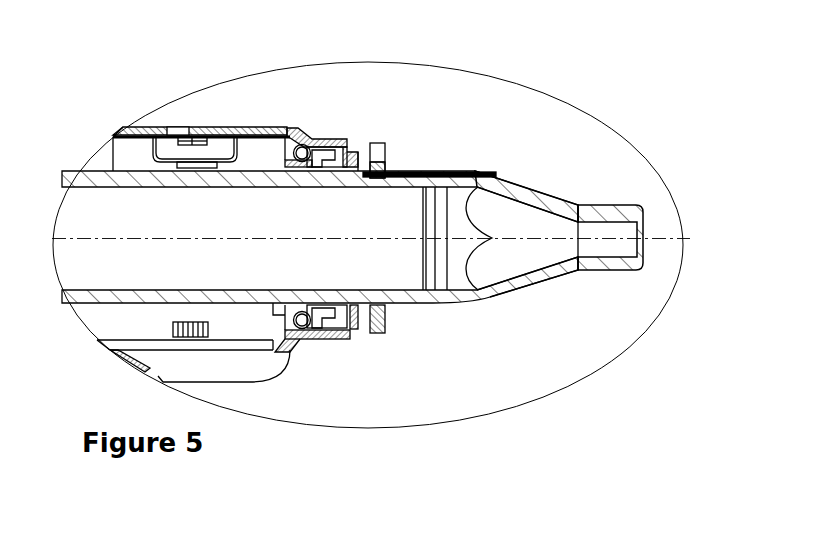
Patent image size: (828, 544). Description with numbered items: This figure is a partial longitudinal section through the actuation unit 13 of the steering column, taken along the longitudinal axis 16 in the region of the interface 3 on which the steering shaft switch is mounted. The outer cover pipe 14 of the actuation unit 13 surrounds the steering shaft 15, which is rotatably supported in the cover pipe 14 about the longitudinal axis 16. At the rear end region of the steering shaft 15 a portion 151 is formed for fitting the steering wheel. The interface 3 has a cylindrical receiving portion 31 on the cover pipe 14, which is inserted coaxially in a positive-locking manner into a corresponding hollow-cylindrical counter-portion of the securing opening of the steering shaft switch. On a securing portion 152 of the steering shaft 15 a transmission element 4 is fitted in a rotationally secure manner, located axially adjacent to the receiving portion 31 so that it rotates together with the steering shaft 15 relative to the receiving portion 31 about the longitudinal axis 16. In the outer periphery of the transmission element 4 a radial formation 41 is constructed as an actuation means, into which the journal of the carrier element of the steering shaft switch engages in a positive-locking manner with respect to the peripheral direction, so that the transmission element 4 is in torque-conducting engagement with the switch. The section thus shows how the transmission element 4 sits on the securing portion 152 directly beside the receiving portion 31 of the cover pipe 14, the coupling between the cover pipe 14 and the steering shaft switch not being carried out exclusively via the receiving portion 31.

The steering shaft 15 is at (115, 180).
The portion for fitting a steering wheel 151 is at (549, 198).
The securing portion 152 is at (420, 175).
The longitudinal axis 16 is at (656, 240).
The cover pipe 14 is at (134, 126).
The actuation unit 13 is at (210, 118).
The interface 3 is at (322, 108).
The receiving portion 31 is at (312, 138).
The radial formation 41 is at (379, 150).
The transmission element 4 is at (388, 333).